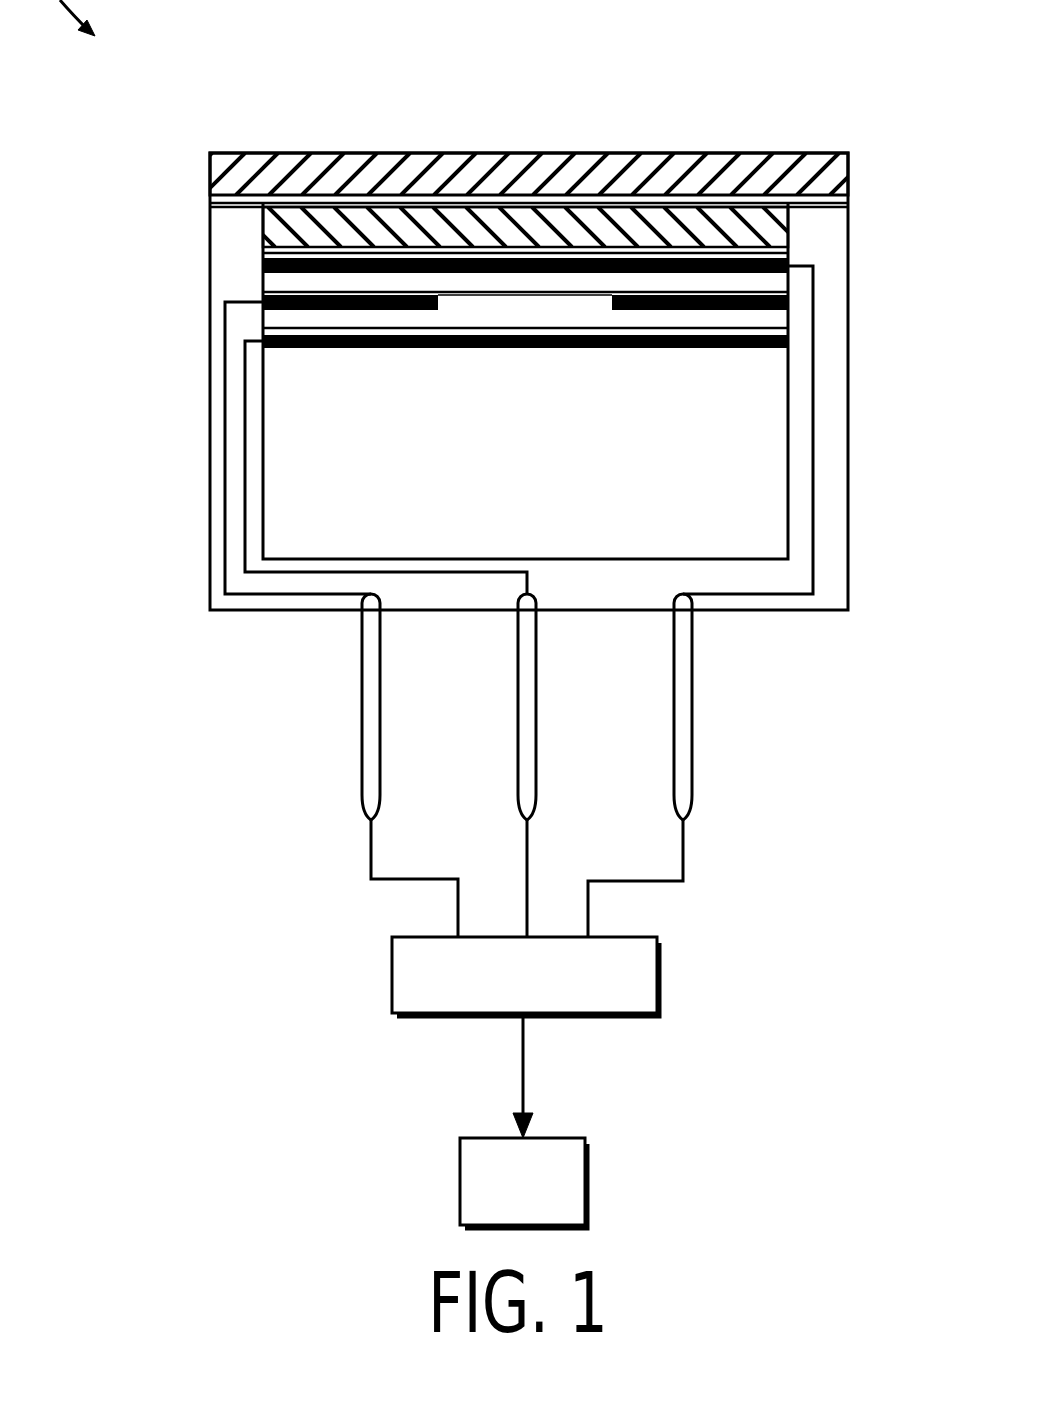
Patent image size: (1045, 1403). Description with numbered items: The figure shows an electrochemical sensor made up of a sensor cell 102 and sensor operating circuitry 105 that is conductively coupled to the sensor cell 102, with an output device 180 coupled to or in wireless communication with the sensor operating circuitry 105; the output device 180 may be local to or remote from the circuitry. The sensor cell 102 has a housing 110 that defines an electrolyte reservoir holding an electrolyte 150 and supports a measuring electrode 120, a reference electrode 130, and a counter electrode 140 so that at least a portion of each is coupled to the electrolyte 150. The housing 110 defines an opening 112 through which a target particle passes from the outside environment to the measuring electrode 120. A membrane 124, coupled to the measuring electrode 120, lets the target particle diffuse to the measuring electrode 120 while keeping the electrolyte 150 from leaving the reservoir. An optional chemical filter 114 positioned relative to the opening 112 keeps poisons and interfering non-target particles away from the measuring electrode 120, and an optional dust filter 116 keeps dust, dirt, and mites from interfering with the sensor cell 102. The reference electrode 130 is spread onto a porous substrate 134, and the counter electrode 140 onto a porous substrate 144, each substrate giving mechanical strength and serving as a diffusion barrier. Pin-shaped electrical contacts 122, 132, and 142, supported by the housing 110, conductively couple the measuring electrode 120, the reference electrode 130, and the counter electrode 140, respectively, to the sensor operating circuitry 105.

The sensor cell 102 is at (173, 178).
The sensor operating circuitry 105 is at (660, 963).
The housing 110 is at (209, 323).
The opening 112 is at (503, 252).
The chemical filter 114 is at (789, 240).
The dust filter 116 is at (635, 153).
The measuring electrode 120 is at (263, 264).
The electrical contact 122 is at (692, 727).
The membrane 124 is at (789, 256).
The reference electrode 130 is at (612, 304).
The electrical contact 132 is at (380, 727).
The substrate 134 is at (612, 295).
The counter electrode 140 is at (453, 349).
The electrical contact 142 is at (537, 727).
The substrate 144 is at (780, 328).
The electrolyte 150 is at (550, 465).
The output device 180 is at (588, 1153).